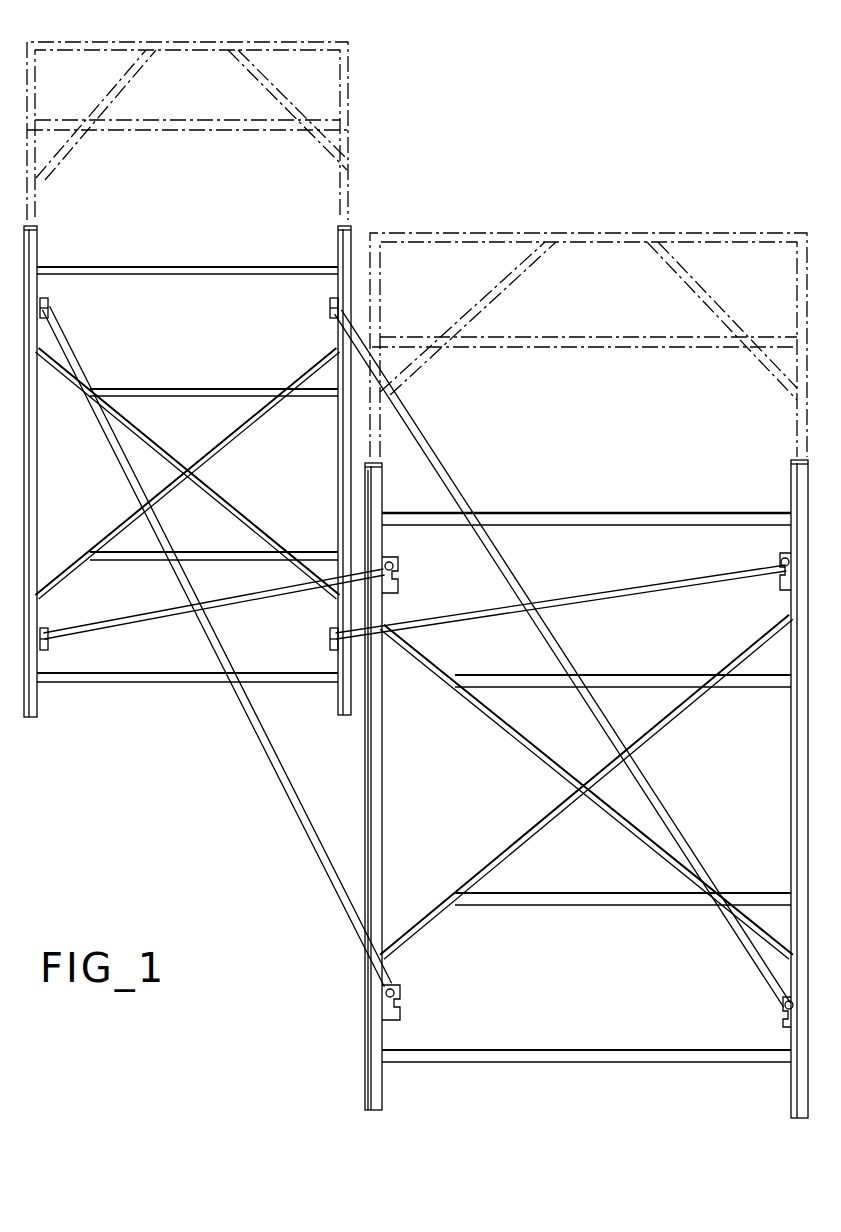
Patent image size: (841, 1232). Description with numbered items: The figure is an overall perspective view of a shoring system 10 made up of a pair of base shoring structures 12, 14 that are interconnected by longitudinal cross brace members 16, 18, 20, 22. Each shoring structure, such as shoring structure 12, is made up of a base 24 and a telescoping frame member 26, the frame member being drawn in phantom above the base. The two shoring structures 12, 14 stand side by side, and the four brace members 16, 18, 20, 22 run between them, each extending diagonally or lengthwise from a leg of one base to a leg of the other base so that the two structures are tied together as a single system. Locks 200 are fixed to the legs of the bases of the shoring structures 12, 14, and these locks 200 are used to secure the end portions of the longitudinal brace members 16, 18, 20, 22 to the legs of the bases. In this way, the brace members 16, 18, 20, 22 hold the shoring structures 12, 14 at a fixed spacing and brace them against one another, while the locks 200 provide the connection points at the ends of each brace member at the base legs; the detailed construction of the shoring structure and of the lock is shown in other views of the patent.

The shoring system 10 is at (337, 1000).
The shoring structure 12 is at (590, 513).
The shoring structure 14 is at (170, 266).
The longitudinal cross brace member 16 is at (340, 914).
The longitudinal cross brace member 18 is at (167, 612).
The longitudinal cross brace member 20 is at (464, 499).
The longitudinal cross brace member 22 is at (655, 585).
The base 24 is at (370, 1052).
The telescoping frame member 26 is at (585, 232).
The lock 200 is at (84, 296).